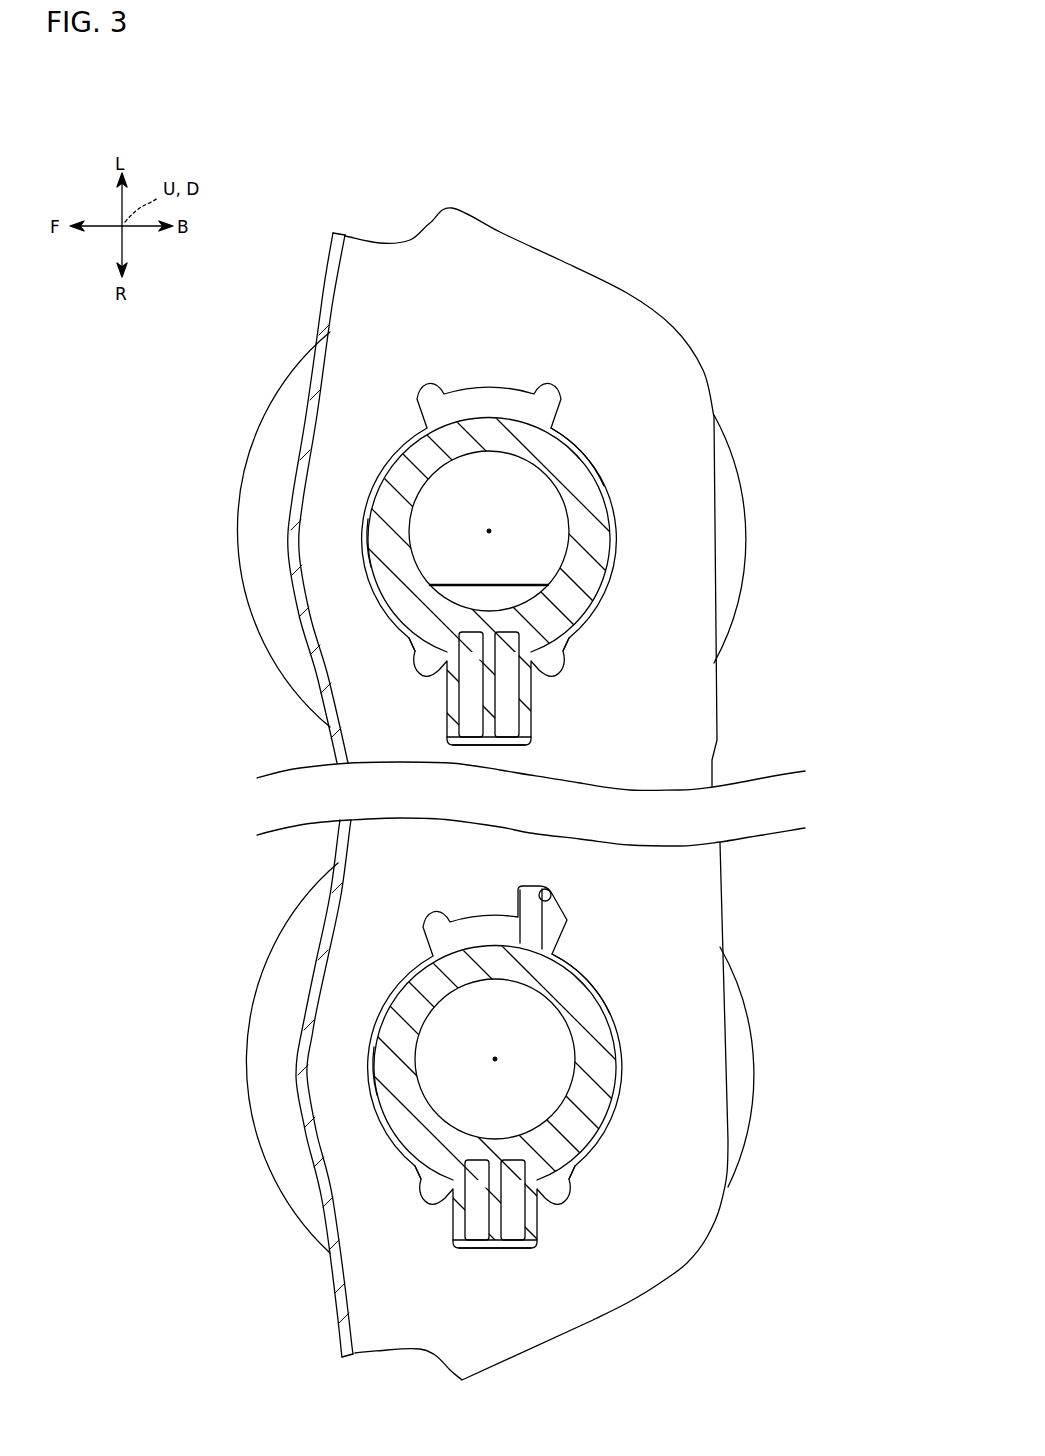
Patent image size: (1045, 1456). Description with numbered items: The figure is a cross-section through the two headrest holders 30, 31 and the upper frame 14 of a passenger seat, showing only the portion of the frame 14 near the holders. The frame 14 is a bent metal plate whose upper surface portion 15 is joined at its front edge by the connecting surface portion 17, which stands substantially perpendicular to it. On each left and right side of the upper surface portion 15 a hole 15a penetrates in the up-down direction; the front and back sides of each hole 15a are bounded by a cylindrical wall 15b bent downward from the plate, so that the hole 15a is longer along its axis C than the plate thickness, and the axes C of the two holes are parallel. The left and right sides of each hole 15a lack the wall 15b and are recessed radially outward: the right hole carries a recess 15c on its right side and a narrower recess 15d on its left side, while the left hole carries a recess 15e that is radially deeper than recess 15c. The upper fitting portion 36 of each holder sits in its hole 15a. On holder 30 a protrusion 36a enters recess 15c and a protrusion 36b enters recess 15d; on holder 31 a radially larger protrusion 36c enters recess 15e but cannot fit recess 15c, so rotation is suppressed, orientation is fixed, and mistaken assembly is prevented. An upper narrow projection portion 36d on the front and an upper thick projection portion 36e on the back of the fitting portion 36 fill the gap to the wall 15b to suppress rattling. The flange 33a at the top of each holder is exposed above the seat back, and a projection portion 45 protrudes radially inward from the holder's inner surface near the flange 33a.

The upper frame 14 is at (729, 271).
The upper surface portion 15 is at (540, 270).
The hole 15a is at (487, 815).
The cylindrical wall 15b is at (489, 902).
The recess 15c is at (495, 1279).
The recess 15d is at (567, 887).
The recess 15e is at (515, 756).
The connecting surface portion 17 is at (328, 300).
The headrest holder 30 is at (525, 1067).
The headrest holder 31 is at (522, 539).
The flange 33a is at (260, 518).
The upper fitting portion 36 is at (516, 799).
The protrusion 36a is at (506, 1222).
The protrusion 36b is at (522, 897).
The protrusion 36c is at (530, 684).
The upper narrow projection portion 36d is at (345, 806).
The upper thick projection portion 36e is at (610, 721).
The projection portion 45 is at (492, 795).
The axis C is at (519, 776).